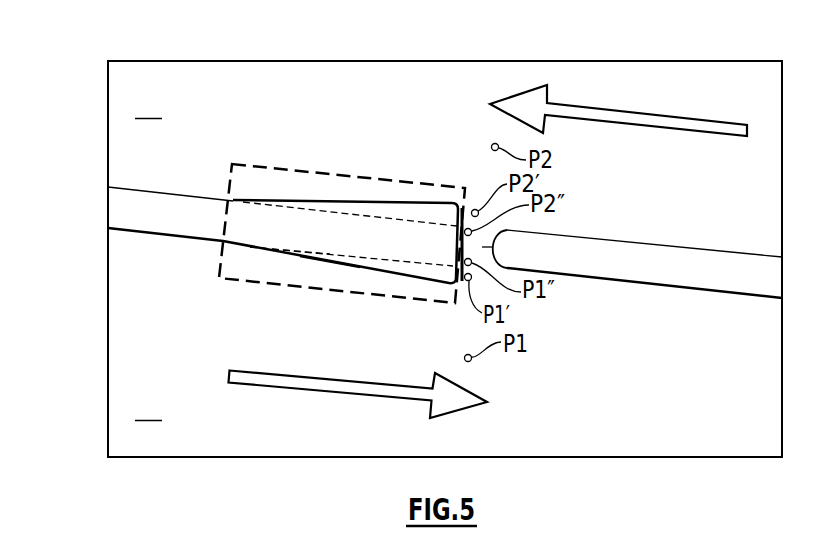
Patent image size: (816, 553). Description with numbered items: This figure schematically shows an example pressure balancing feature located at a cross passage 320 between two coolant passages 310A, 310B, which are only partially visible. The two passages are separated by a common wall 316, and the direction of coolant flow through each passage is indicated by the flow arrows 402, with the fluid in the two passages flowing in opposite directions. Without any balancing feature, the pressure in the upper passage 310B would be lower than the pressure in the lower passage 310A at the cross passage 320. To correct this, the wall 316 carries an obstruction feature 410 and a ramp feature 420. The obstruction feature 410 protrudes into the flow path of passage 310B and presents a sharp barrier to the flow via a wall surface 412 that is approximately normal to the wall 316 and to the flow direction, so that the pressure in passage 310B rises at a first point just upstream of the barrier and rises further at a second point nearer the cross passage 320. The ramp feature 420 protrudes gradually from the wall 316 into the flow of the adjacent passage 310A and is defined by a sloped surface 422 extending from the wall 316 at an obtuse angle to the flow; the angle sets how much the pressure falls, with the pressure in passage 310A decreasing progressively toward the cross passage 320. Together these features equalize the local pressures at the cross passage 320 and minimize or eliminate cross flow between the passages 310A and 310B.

The passage 310A is at (120, 430).
The passage 310B is at (120, 88).
The wall 316 is at (200, 226).
The cross passage 320 is at (505, 242).
The flow arrows 402 is at (578, 103).
The obstruction feature 410 is at (394, 202).
The wall surface 412 is at (463, 208).
The ramp feature 420 is at (303, 256).
The sloped surface 422 is at (330, 262).